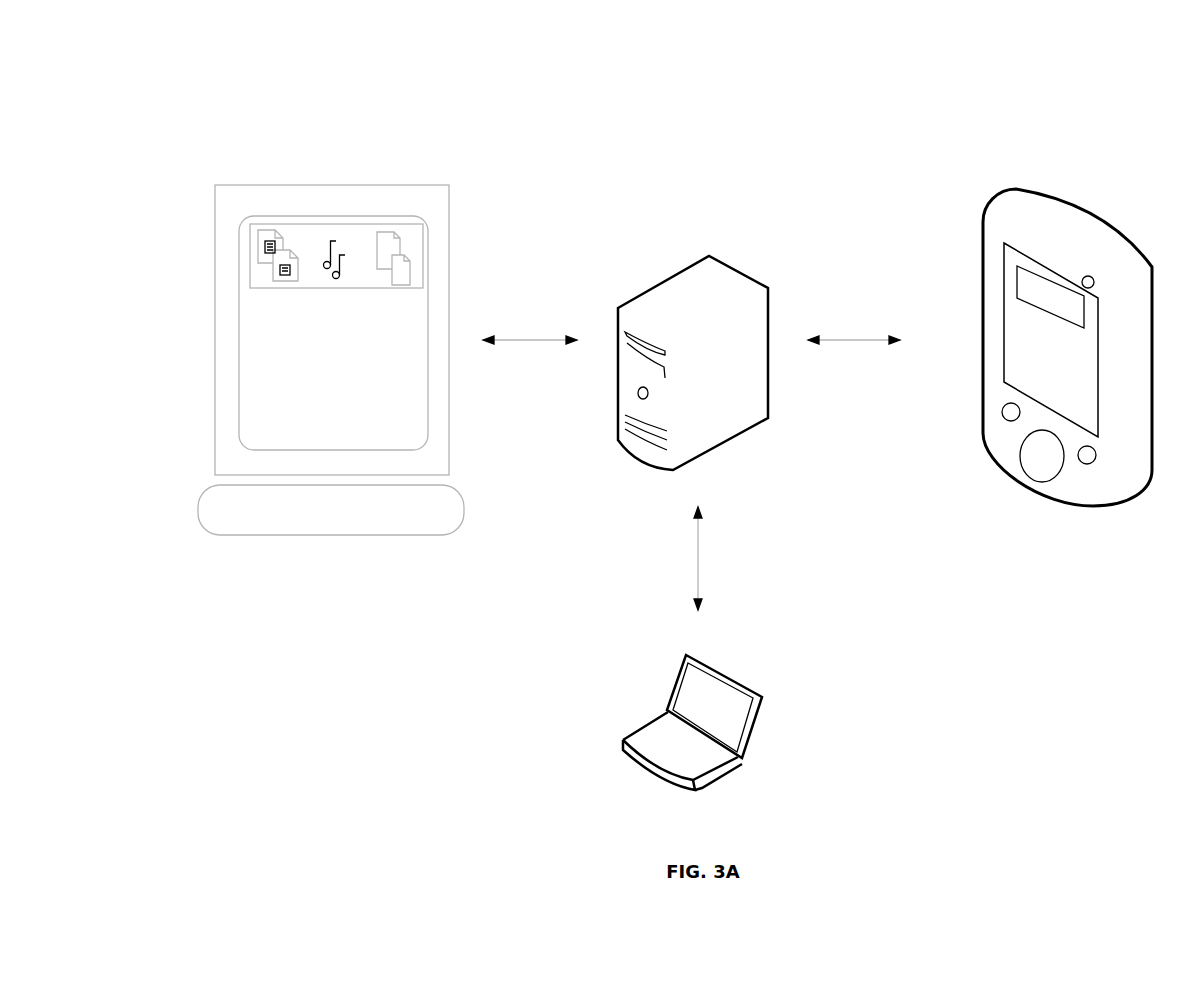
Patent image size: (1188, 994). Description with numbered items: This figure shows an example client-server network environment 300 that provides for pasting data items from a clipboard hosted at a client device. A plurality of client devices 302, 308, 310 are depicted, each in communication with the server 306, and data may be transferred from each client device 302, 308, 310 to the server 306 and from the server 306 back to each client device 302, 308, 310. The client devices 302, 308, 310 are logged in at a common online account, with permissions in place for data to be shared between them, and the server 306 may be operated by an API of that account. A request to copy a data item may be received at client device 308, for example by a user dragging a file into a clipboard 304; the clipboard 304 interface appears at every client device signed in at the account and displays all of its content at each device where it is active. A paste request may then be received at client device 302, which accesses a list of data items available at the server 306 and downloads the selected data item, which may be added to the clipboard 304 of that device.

The content distribution system 300 is at (282, 62).
The client device 302 is at (449, 262).
The clipboard 304 is at (335, 224).
The server 306 is at (699, 259).
The client device 308 is at (1067, 205).
The client device 310 is at (737, 677).